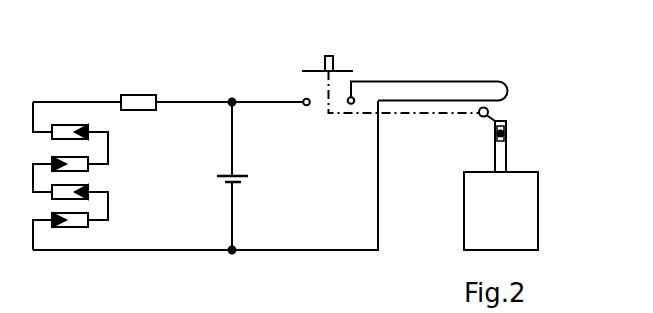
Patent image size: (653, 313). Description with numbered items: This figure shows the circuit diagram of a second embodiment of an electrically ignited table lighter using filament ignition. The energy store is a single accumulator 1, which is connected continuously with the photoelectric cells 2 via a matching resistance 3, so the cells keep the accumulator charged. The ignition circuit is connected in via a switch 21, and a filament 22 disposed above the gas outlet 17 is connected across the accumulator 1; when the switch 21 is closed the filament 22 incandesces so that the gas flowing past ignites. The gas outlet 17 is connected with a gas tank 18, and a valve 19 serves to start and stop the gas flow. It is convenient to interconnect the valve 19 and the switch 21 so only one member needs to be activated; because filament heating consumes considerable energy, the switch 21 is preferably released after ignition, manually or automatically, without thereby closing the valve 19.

The accumulator 1 is at (237, 175).
The photoelectric cells 2 is at (76, 133).
The matching resistance 3 is at (142, 100).
The gas outlet 17 is at (505, 120).
The gas tank 18 is at (525, 212).
The valve 19 is at (506, 134).
The switch 21 is at (342, 71).
The filament 22 is at (478, 81).